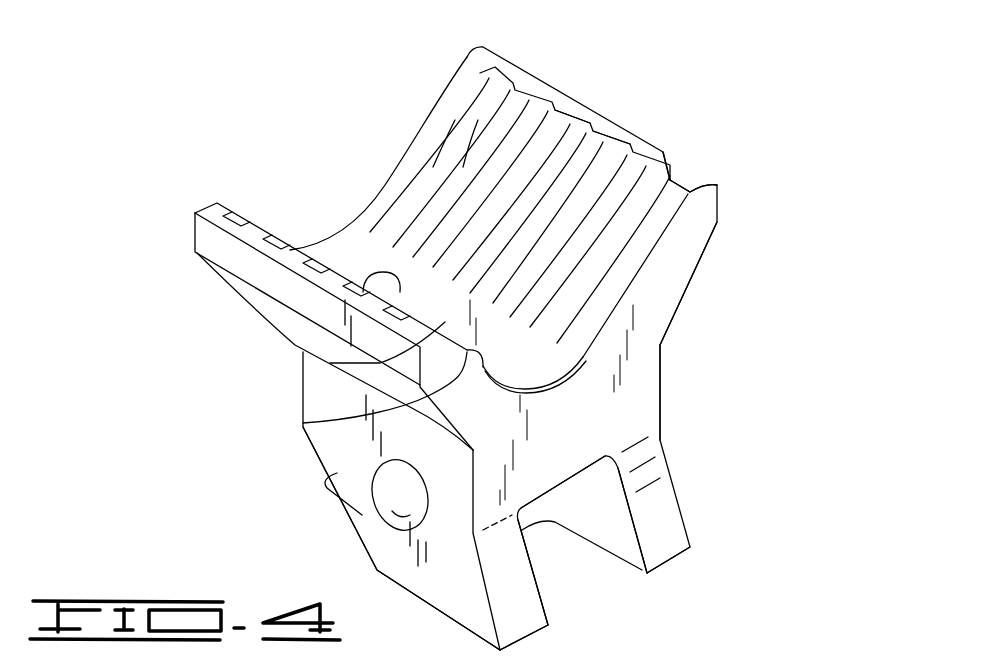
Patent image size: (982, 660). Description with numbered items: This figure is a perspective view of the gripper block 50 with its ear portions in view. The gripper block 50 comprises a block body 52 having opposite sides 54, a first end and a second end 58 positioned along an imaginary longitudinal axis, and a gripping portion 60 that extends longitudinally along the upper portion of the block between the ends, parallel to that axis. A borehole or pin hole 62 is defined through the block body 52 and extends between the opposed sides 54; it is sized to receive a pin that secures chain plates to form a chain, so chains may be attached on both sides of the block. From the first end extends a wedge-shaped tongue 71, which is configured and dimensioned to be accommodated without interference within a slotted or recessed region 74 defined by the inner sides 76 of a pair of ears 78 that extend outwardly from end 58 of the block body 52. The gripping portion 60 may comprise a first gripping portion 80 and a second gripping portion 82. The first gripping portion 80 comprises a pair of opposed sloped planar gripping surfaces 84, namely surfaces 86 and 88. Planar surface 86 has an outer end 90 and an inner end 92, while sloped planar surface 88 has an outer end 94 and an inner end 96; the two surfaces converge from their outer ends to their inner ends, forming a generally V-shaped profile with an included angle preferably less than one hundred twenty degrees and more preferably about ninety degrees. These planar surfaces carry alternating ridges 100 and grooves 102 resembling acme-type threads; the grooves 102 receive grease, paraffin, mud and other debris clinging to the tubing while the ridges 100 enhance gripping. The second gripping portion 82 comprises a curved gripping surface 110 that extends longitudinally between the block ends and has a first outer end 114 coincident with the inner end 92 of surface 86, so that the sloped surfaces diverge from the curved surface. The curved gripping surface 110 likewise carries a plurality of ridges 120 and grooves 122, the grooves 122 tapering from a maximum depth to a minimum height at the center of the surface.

The gripper block 50 is at (716, 68).
The block body 52 is at (658, 313).
The opposite sides 54 is at (380, 542).
The second end 58 is at (570, 441).
The gripping portion 60 is at (410, 167).
The borehole or pin hole 62 is at (403, 512).
The wedge-shaped tongue 71 is at (327, 481).
The slotted or recessed region 74 is at (575, 570).
The inner sides of ears 76 is at (560, 600).
The ears 78 is at (462, 606).
The first gripping portion 80 is at (661, 150).
The second gripping portion 82 is at (626, 377).
The sloped planar gripping surfaces 84 is at (575, 107).
The planar surface 86 is at (507, 90).
The sloped planar surface 88 is at (268, 322).
The first or outer end 90 is at (694, 182).
The second or inner end 92 is at (733, 283).
The first or outer end 94 is at (347, 358).
The second or inner end 96 is at (303, 423).
The ridges 100 is at (573, 133).
The grooves 102 is at (628, 168).
The curved gripping surface 110 is at (605, 360).
The first outer end 114 is at (640, 258).
The ridges 120 is at (463, 167).
The grooves 122 is at (433, 167).